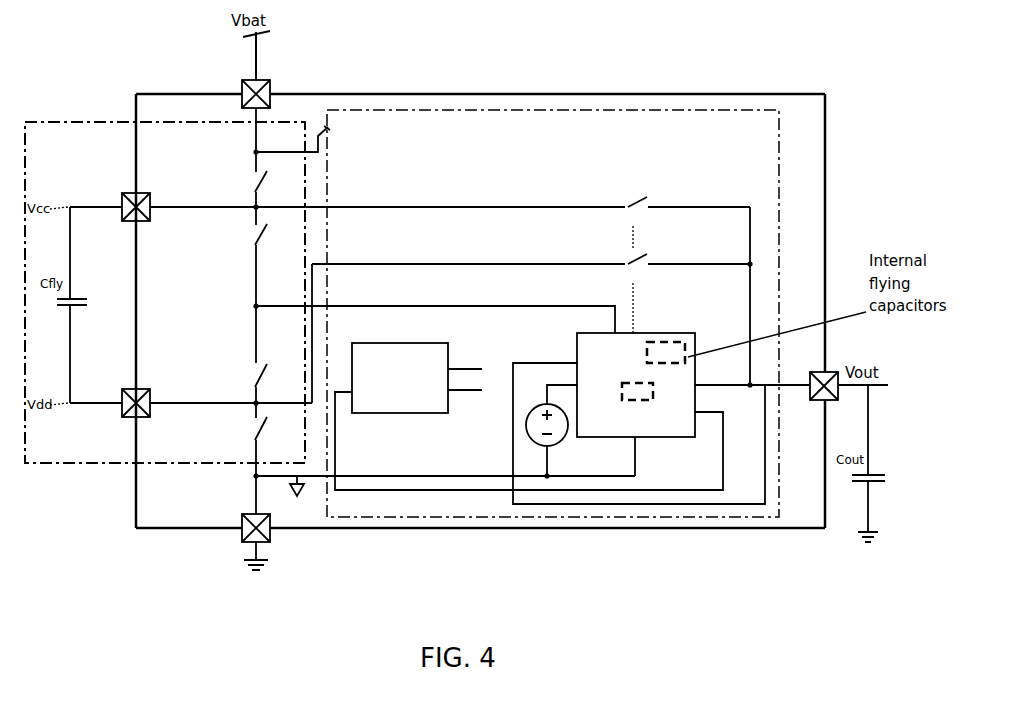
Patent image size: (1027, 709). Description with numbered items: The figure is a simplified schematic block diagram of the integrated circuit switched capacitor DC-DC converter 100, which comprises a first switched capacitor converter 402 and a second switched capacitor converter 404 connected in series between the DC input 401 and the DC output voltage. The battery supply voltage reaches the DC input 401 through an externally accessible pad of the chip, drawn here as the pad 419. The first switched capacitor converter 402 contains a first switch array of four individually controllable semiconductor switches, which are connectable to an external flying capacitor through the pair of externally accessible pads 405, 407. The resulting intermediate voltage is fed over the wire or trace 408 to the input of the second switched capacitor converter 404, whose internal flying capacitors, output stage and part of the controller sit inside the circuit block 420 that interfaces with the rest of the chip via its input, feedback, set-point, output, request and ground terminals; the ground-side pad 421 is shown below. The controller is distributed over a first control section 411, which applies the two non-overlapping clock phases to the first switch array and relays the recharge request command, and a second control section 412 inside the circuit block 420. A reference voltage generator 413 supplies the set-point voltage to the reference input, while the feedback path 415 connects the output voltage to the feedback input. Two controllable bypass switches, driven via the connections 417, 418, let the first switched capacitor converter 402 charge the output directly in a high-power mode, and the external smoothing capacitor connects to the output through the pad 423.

The integrated circuit switched capacitor DC-DC converter 100 is at (170, 536).
The DC input 401 is at (253, 146).
The first switched capacitor converter 402 is at (204, 466).
The second switched capacitor converter 404 is at (517, 522).
The externally accessible pad or terminal 405 is at (142, 193).
The externally accessible pad or terminal 407 is at (142, 389).
The wire or trace 408 is at (547, 311).
The first control section 411 is at (412, 343).
The second control section 412 is at (622, 391).
The reference voltage generator 413 is at (529, 441).
The feedback loop 415 is at (513, 426).
The port or connection 417 is at (637, 243).
The port or connection 418 is at (637, 315).
The battery terminal 419 is at (242, 84).
The circuit block 420 is at (663, 437).
The ground terminal 421 is at (270, 549).
The terminal or pad 423 is at (828, 371).